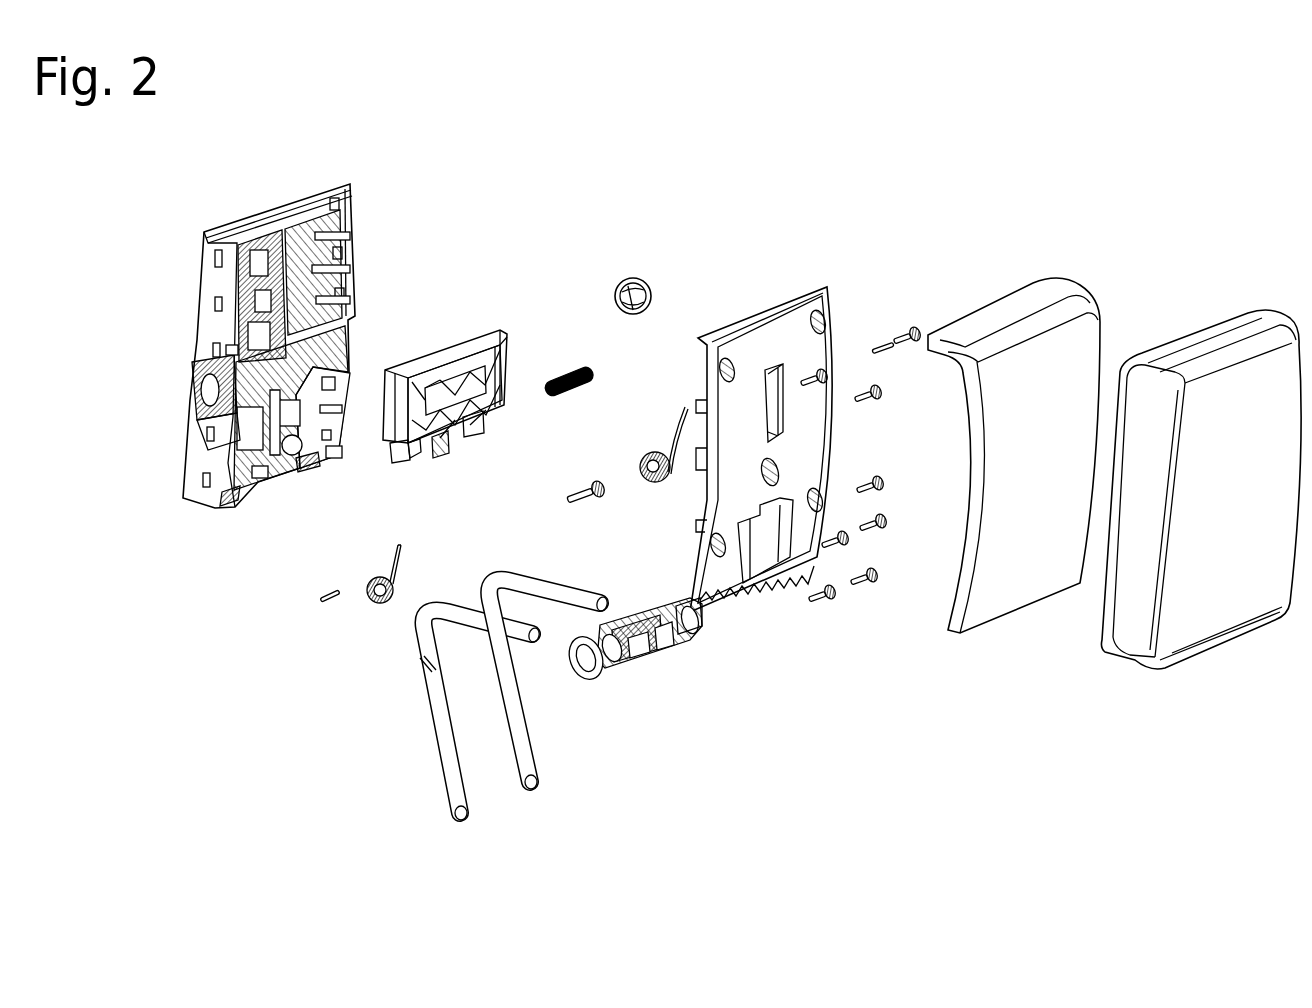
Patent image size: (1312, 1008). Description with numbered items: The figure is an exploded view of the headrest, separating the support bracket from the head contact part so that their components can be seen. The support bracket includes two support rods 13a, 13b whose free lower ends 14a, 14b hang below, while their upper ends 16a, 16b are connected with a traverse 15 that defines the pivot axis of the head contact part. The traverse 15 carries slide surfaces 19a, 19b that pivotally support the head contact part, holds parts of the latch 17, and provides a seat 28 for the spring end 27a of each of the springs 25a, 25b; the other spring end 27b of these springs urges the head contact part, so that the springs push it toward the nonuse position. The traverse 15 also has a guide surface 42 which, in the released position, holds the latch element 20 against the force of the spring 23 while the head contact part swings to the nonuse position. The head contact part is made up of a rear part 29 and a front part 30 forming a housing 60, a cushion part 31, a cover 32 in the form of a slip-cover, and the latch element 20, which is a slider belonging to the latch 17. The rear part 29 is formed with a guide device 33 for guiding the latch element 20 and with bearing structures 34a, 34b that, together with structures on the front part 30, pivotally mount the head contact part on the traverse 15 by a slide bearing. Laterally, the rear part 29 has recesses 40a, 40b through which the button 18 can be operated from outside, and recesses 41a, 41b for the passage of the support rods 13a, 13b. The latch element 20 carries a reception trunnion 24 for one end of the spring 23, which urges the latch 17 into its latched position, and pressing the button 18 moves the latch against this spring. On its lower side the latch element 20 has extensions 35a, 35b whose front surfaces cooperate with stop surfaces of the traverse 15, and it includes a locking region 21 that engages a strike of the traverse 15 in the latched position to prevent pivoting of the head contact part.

The support rod 13a is at (450, 776).
The support rod 13b is at (526, 788).
The free end 14a is at (455, 818).
The free end 14b is at (545, 786).
The traverse 15 is at (590, 678).
The upper end 16a is at (510, 634).
The upper end 16b is at (591, 592).
The latch 17 is at (636, 614).
The button 18 is at (651, 290).
The slide surface 19a is at (648, 666).
The slide surface 19b is at (680, 646).
The latch element 20 is at (446, 340).
The locking region 21 is at (450, 458).
The spring 23 is at (577, 372).
The reception trunnion 24 is at (482, 342).
The spring 25a is at (368, 604).
The spring 25b is at (648, 448).
The spring end 27a is at (418, 562).
The spring end 27b is at (388, 538).
The seat 28 is at (608, 668).
The rear part 29 is at (335, 184).
The front part 30 is at (808, 292).
The cushion part 31 is at (1073, 300).
The cover 32 is at (1268, 337).
The guide device 33 is at (231, 350).
The bearing structure 34a is at (262, 478).
The bearing structure 34b is at (340, 455).
The extension 35a is at (420, 472).
The extension 35b is at (488, 433).
The recess 40a is at (183, 400).
The recess 40b is at (349, 322).
The recess 41a is at (235, 496).
The recess 41b is at (310, 464).
The guide surface 42 is at (660, 664).
The housing 60 is at (266, 206).